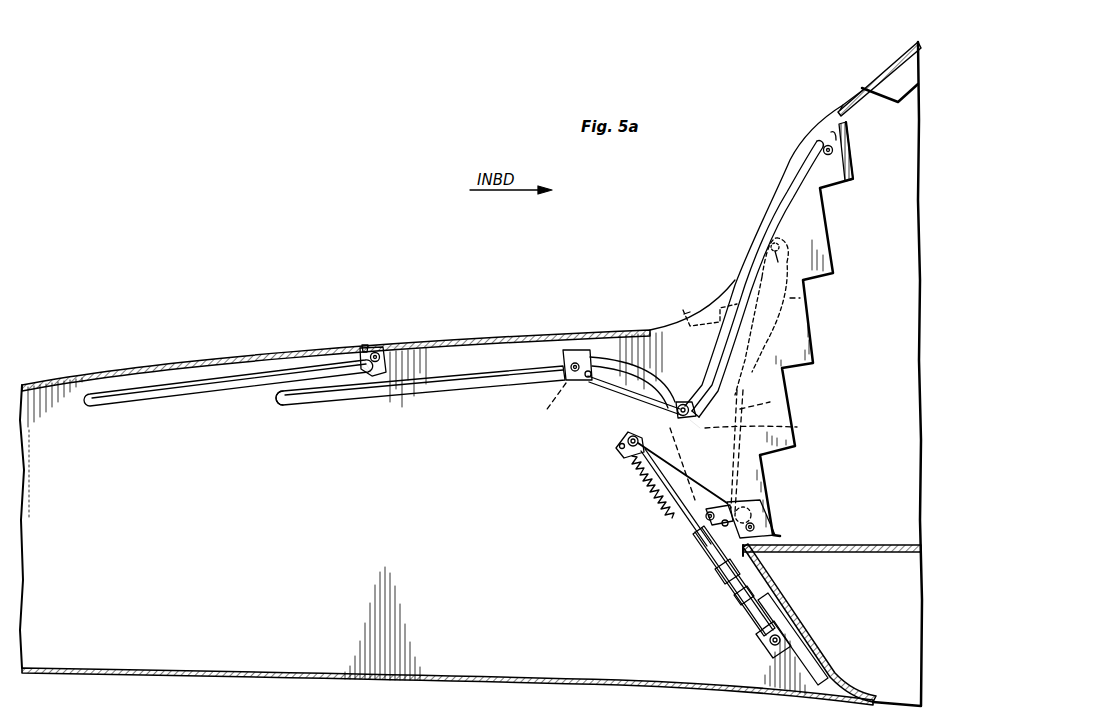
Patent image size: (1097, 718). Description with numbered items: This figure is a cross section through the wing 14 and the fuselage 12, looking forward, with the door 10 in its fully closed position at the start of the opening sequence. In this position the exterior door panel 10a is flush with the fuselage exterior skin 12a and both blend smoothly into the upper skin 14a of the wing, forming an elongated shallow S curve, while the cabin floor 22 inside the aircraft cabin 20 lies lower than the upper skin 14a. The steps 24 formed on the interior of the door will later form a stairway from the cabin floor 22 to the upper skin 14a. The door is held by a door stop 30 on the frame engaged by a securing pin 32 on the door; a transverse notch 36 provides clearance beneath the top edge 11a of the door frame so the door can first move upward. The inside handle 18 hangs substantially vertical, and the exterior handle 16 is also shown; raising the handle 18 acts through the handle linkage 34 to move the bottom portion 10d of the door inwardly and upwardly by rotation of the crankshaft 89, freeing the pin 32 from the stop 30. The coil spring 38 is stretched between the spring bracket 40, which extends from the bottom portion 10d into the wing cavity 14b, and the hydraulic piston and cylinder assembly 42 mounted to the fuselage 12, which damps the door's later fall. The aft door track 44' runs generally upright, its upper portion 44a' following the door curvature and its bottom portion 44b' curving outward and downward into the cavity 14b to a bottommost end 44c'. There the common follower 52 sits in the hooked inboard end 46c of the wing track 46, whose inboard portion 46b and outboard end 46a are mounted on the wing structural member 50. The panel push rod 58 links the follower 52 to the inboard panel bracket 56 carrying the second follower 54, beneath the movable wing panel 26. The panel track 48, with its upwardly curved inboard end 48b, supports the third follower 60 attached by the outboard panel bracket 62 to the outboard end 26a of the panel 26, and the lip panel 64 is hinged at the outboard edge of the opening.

The door 10 is at (818, 121).
The exterior door panel 10a is at (727, 283).
The bottom portion of the door 10d is at (760, 524).
The top edge of the door frame 11a is at (843, 104).
The fuselage 12 is at (902, 48).
The fuselage exterior skin 12a is at (880, 68).
The wing 14 is at (128, 368).
The upper skin of the wing 14a is at (275, 352).
The wing cavity 14b is at (122, 660).
The exterior handle 16 is at (684, 308).
The inside handle 18 is at (800, 298).
The aircraft cabin 20 is at (915, 335).
The cabin floor 22 is at (848, 546).
The steps 24 is at (827, 232).
The movable wing panel 26 is at (405, 346).
The outboard end of the wing panel 26a is at (395, 347).
The door stop 30 is at (834, 150).
The securing pin 32 is at (848, 162).
The handle linkage 34 is at (740, 411).
The transverse notch 36 is at (845, 125).
The coil spring 38 is at (660, 497).
The spring bracket 40 is at (630, 470).
The hydraulic piston and cylinder assembly 42 is at (718, 572).
The aft door track 44' is at (757, 279).
The upper portion of the aft door track 44a' is at (772, 142).
The bottom portion of the aft door track 44b' is at (800, 316).
The bottommost end of the aft door track 44c' is at (705, 436).
The wing track 46 is at (475, 383).
The outboard end of the wing track 46a is at (300, 402).
The inboard portion of the wing track 46b is at (617, 364).
The inboard end of the wing track 46c is at (797, 428).
The panel track 48 is at (228, 393).
The inboard end of the panel track 48b is at (398, 364).
The wing structural member 50 is at (393, 397).
The common follower 52 is at (650, 413).
The second follower 54 is at (545, 404).
The inboard panel bracket 56 is at (572, 360).
The panel push rod 58 is at (625, 394).
The third follower 60 is at (368, 374).
The outboard panel bracket 62 is at (375, 350).
The lip panel 64 is at (364, 348).
The crankshaft 89 is at (754, 534).